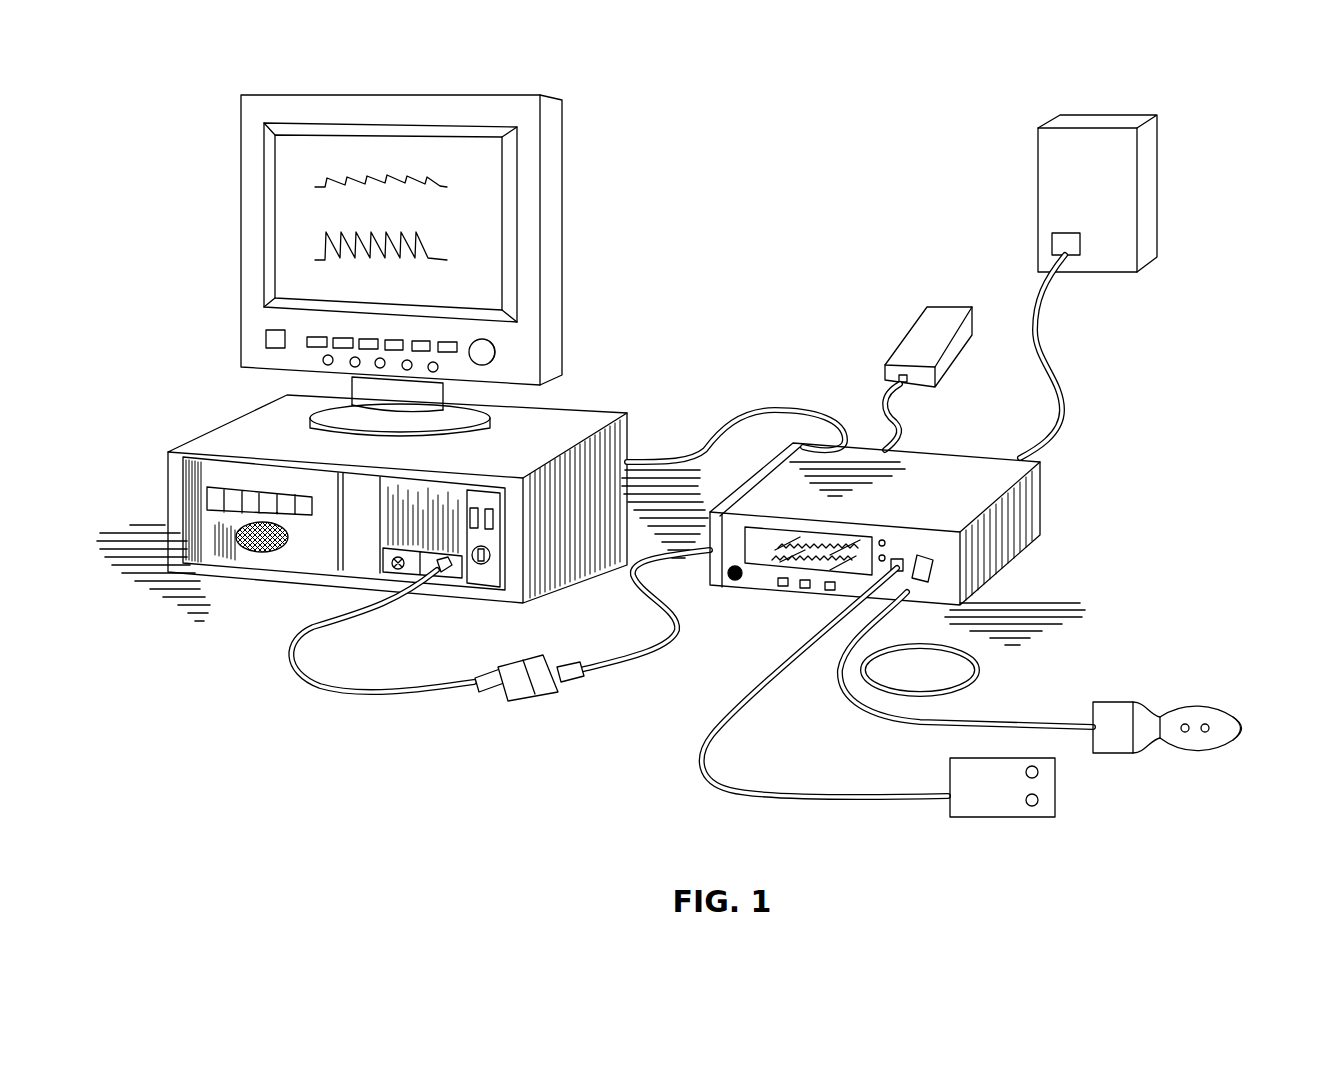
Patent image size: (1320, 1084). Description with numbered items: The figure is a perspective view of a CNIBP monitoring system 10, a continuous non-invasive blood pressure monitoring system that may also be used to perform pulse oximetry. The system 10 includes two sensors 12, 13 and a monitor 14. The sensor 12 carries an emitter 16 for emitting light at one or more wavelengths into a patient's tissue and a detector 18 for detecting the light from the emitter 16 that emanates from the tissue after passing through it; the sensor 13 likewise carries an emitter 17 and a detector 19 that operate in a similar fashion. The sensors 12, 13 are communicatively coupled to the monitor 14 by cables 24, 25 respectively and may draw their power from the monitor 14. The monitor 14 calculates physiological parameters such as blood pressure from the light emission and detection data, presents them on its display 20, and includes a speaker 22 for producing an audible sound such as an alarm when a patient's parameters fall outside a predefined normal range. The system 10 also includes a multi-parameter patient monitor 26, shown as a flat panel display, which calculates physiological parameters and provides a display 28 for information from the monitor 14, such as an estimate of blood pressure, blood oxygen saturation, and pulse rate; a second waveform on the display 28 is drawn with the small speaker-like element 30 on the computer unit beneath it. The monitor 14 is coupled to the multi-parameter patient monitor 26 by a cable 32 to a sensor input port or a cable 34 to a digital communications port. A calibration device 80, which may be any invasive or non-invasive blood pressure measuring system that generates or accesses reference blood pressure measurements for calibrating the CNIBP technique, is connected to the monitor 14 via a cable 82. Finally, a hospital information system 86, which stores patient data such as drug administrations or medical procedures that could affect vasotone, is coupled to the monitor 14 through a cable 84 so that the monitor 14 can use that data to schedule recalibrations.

The CNIBP monitoring system 10 is at (893, 222).
The sensor 12 is at (1255, 702).
The sensor 13 is at (946, 778).
The monitor 14 is at (945, 448).
The emitter 16 is at (1184, 735).
The emitter 17 is at (1038, 778).
The detector 18 is at (1206, 735).
The detector 19 is at (1038, 806).
The display 20 is at (772, 562).
The speaker 22 is at (733, 584).
The cable 24 is at (867, 710).
The cable 25 is at (713, 740).
The multi-parameter patient monitor 26 is at (558, 158).
The display 28 is at (300, 245).
The computer speaker 30 is at (262, 555).
The cable 32 is at (620, 670).
The cable 34 is at (783, 412).
The calibration device 80 is at (920, 318).
The cable 82 is at (897, 424).
The cable 84 is at (1055, 354).
The hospital information system 86 is at (1157, 158).